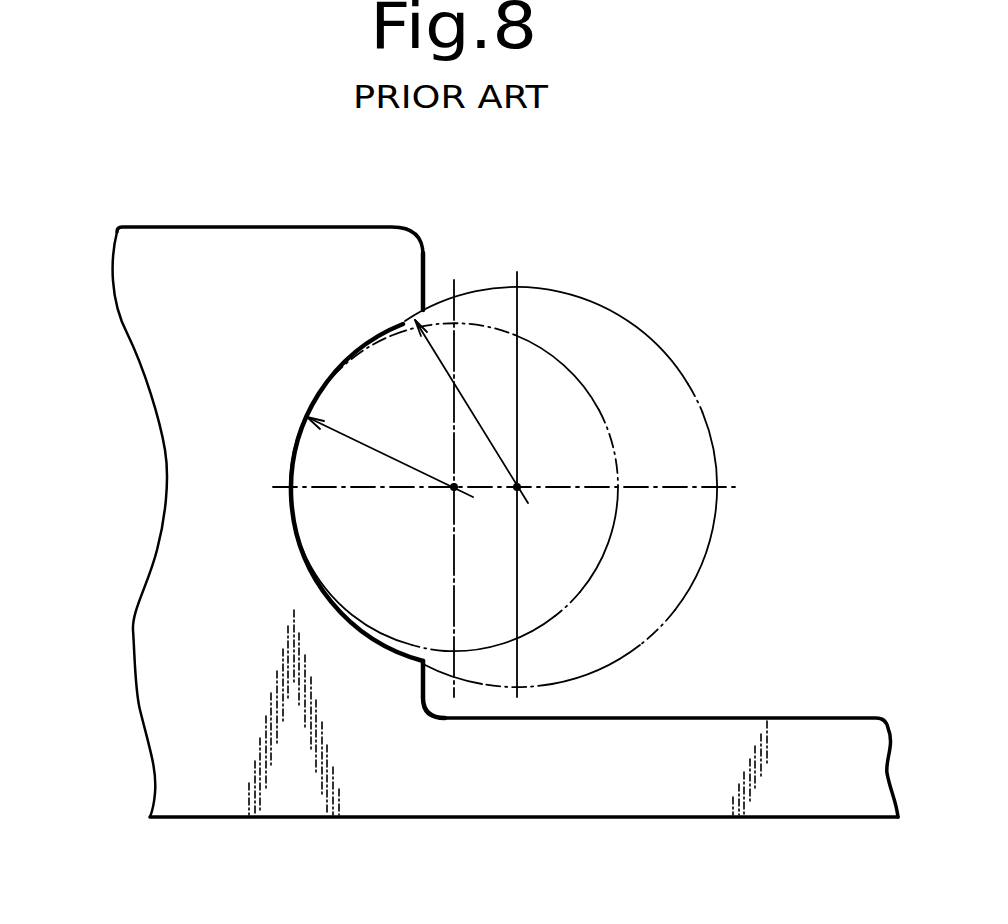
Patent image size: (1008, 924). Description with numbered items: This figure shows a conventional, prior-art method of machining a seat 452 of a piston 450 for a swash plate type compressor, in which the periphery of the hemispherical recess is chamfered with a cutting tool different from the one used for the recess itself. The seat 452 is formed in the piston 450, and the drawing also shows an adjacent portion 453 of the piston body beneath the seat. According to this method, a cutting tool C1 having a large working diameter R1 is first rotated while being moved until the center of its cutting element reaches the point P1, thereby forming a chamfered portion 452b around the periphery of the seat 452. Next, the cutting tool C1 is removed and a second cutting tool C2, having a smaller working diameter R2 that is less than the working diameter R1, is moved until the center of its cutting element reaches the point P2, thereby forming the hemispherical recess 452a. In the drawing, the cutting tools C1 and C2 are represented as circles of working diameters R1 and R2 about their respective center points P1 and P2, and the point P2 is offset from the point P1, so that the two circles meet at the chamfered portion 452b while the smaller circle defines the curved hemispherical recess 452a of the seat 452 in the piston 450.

The piston 450 is at (235, 791).
The seat 452 is at (332, 363).
The hemispherical recess 452a is at (292, 525).
The chamfered portion 452b is at (413, 322).
The base portion 453 is at (653, 800).
The cutting tool C1 is at (622, 313).
The cutting tool C2 is at (505, 330).
The point P1 is at (536, 484).
The point P2 is at (471, 488).
The working diameter R1 is at (471, 411).
The working diameter R2 is at (390, 451).